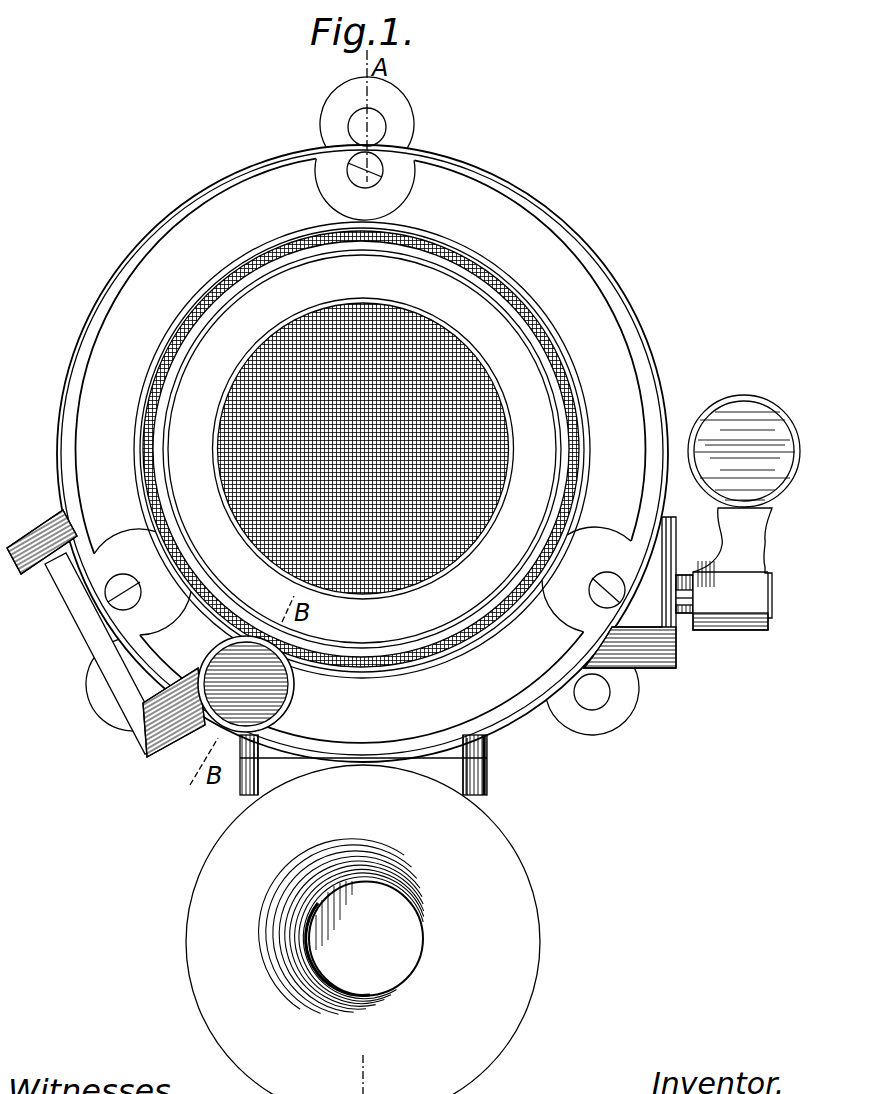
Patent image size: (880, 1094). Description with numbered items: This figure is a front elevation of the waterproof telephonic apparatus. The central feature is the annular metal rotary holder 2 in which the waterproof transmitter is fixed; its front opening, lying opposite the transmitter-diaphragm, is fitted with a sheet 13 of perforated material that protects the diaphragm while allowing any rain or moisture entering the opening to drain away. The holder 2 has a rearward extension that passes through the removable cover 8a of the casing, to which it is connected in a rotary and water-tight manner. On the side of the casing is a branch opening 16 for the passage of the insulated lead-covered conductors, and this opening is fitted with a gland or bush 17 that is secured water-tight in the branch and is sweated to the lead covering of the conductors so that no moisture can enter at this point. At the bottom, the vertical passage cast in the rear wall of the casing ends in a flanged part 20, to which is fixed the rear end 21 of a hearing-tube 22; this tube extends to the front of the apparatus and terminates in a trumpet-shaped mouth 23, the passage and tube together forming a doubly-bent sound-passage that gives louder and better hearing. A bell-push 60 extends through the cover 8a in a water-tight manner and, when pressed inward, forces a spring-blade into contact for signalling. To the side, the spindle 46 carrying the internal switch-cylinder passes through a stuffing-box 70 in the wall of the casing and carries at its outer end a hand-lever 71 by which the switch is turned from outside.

The annular metal rotary holder 2 is at (362, 450).
The cover 8a is at (362, 419).
The sheet of perforated material 13 is at (363, 448).
The branch opening 16 is at (42, 526).
The gland or bush 17 is at (63, 601).
The flanged part 20 is at (487, 748).
The rear end of hearing-tube 21 is at (457, 777).
The hearing-tube 22 is at (341, 926).
The trumpet-shaped mouth 23 is at (363, 929).
The spindle 46 is at (686, 614).
The bell-push 60 is at (246, 684).
The stuffing-box 70 is at (657, 668).
The hand-lever 71 is at (744, 512).